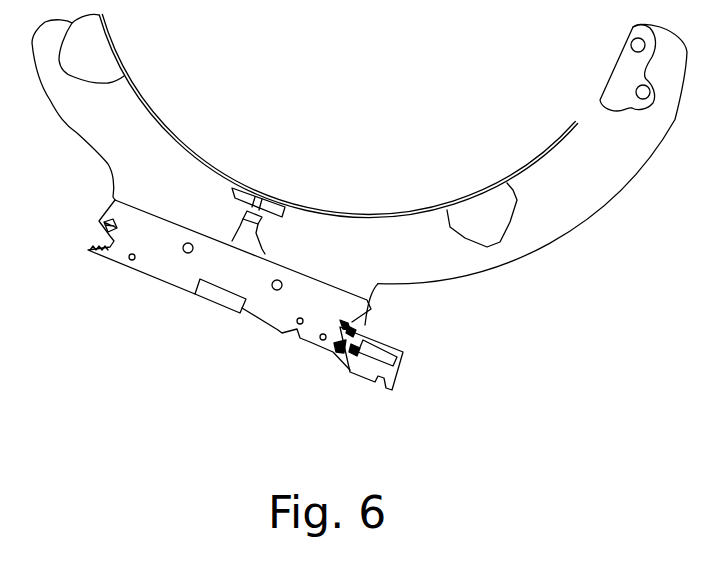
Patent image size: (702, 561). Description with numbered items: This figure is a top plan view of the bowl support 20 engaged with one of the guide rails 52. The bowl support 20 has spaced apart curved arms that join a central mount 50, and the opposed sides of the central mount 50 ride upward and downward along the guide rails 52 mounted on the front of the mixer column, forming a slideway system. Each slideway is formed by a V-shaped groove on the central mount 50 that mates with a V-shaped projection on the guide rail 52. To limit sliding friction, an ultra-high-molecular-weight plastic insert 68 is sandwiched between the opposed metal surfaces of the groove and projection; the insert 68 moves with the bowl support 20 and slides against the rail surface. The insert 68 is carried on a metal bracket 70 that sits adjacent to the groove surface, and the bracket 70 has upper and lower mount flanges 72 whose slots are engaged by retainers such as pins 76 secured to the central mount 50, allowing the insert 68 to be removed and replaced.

The bowl support 20 is at (540, 250).
The central mount 50 is at (277, 320).
The guide rail 52 is at (390, 338).
The ultra-high-molecular-weight plastic insert 68 is at (352, 335).
The metal bracket 70 is at (354, 350).
The mount flange 72 is at (348, 328).
The pin 76 is at (351, 327).